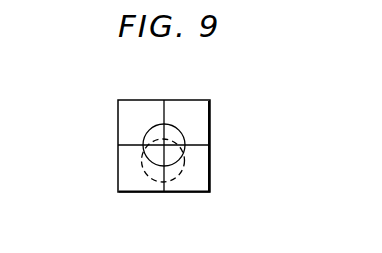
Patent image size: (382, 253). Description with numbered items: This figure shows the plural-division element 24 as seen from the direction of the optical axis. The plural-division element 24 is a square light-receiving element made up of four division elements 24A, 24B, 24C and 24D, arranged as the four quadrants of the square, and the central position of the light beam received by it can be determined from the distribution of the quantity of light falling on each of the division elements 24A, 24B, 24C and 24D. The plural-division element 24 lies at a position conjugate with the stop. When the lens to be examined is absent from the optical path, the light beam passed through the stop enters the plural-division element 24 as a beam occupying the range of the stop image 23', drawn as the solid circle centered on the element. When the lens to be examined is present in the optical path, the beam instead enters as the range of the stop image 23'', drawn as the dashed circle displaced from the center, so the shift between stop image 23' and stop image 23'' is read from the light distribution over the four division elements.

The plural-division element 24 is at (118, 138).
The division element 24A is at (135, 113).
The division element 24B is at (195, 108).
The division element 24C is at (130, 175).
The division element 24D is at (198, 165).
The stop image 23' is at (203, 136).
The stop image 23'' is at (177, 189).